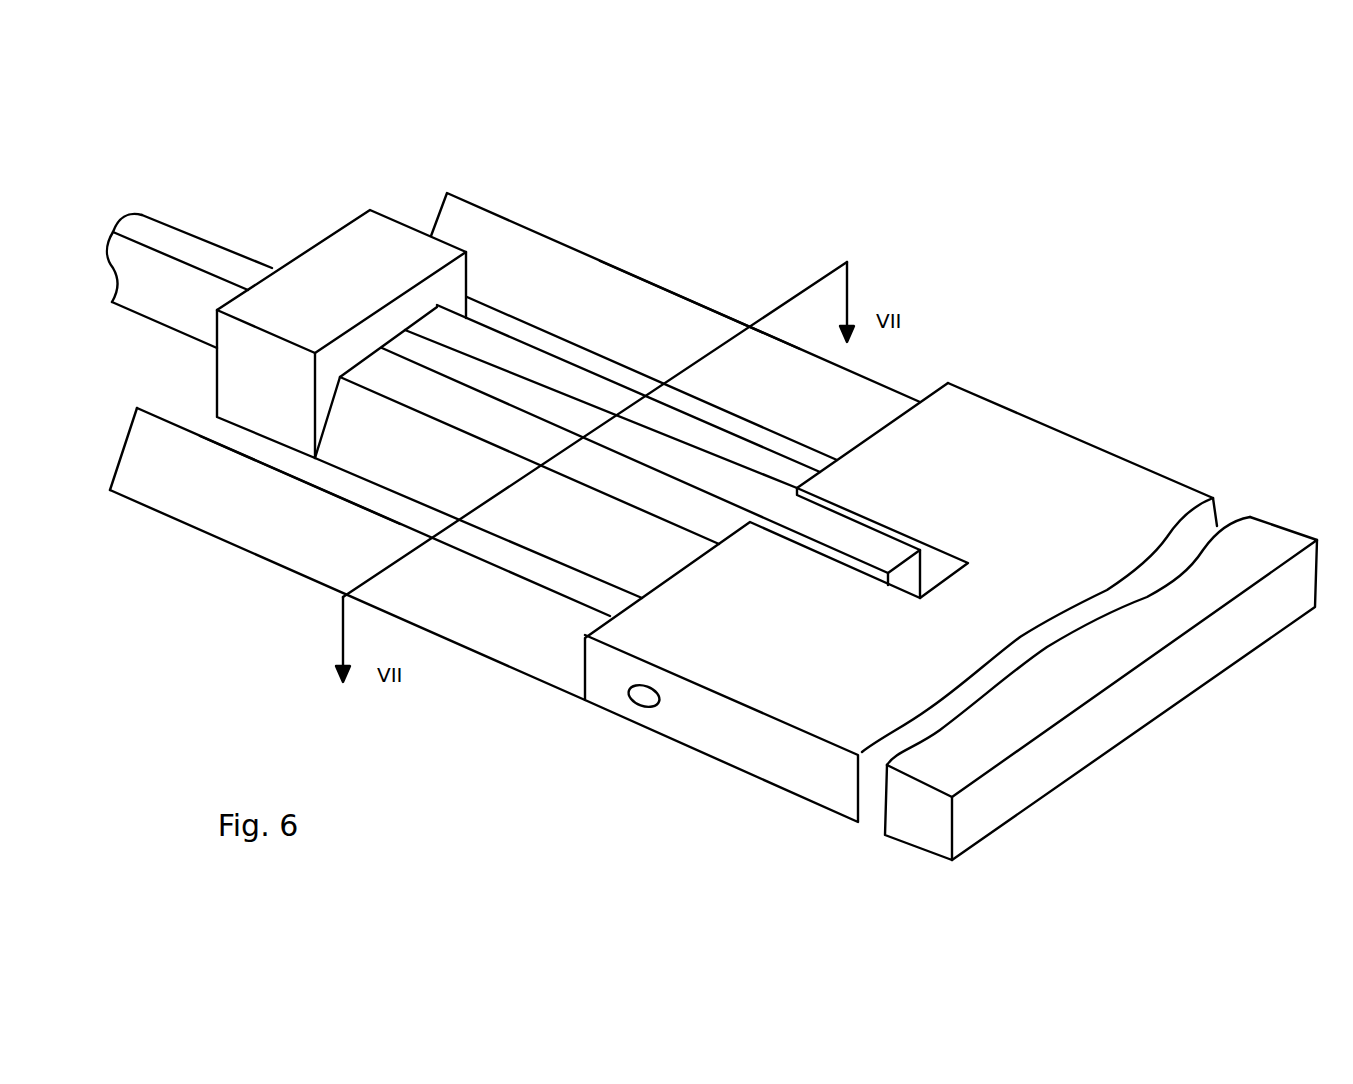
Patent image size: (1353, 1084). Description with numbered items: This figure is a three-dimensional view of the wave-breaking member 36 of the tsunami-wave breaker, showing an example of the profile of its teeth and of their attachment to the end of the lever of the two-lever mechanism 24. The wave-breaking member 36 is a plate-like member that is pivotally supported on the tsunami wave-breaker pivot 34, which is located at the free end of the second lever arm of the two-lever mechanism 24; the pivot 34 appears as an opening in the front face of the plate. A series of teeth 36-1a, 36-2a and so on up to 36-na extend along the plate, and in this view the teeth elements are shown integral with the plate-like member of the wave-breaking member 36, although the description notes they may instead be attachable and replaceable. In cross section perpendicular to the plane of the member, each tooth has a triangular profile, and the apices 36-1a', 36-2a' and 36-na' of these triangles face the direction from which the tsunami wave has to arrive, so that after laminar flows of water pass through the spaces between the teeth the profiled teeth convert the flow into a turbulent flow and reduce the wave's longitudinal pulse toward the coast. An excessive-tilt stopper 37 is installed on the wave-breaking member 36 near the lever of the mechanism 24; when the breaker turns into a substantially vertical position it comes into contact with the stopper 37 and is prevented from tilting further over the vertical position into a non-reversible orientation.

The two-lever mechanism 24 is at (201, 236).
The excessive-tilt stopper 37 is at (332, 260).
The wave-breaking member 36 is at (722, 238).
The tooth 36-1a is at (675, 284).
The apex of tooth 36-1a' is at (700, 238).
The tooth 36-2a is at (614, 388).
The apex of tooth 36-2a' is at (612, 327).
The tooth 36-na is at (347, 512).
The apex of tooth 36-na' is at (239, 445).
The tsunami wave-breaker pivot 34 is at (637, 698).